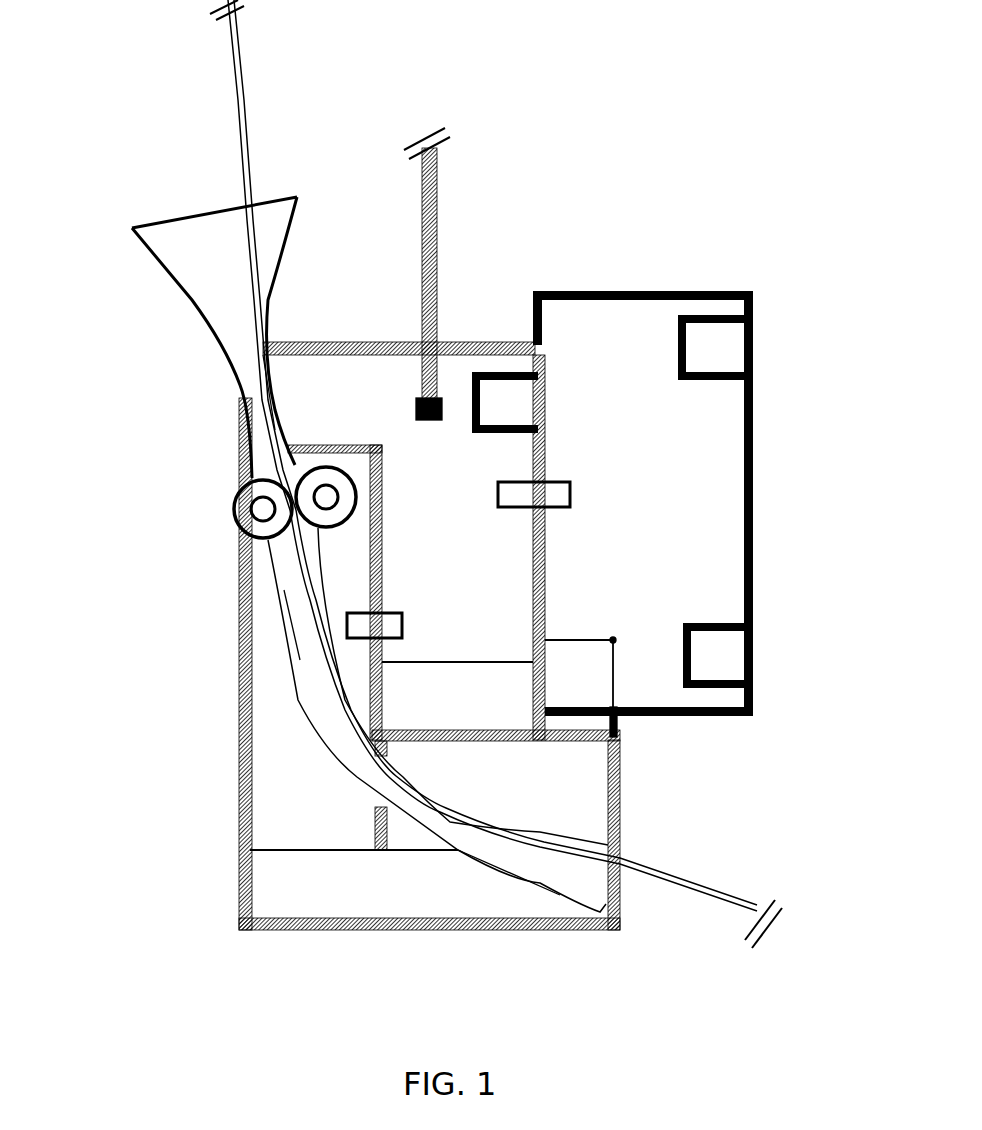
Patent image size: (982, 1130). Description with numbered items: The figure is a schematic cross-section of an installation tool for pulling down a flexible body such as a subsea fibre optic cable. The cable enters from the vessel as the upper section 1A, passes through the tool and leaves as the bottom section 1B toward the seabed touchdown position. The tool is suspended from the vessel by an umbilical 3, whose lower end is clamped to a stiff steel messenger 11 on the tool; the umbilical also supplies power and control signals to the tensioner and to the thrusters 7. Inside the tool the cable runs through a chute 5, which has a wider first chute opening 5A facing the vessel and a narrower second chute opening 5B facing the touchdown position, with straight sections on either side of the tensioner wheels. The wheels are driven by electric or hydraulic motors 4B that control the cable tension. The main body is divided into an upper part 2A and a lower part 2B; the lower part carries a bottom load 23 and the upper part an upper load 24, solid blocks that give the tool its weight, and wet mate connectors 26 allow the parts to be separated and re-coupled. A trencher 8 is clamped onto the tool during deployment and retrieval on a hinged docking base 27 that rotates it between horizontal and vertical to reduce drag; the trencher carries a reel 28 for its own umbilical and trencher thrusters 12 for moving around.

The upper section of the cable 1A is at (230, 85).
The bottom section of the cable 1B is at (702, 892).
The upper part of the installation tool 2A is at (363, 340).
The lower part of the installation tool 2B is at (238, 750).
The umbilical 3 is at (432, 240).
The motor 4B is at (417, 517).
The chute 5 is at (330, 733).
The first chute opening 5A is at (190, 297).
The second chute opening 5B is at (502, 852).
The thrusters 7 is at (507, 402).
The trencher 8 is at (753, 450).
The steel messenger 11 is at (416, 406).
The trencher thrusters 12 is at (713, 501).
The bottom load 23 is at (354, 879).
The upper load 24 is at (457, 691).
The wet mate connectors/stab plates 26 is at (571, 496).
The hinged docking base 27 is at (617, 725).
The reel 28 is at (580, 683).